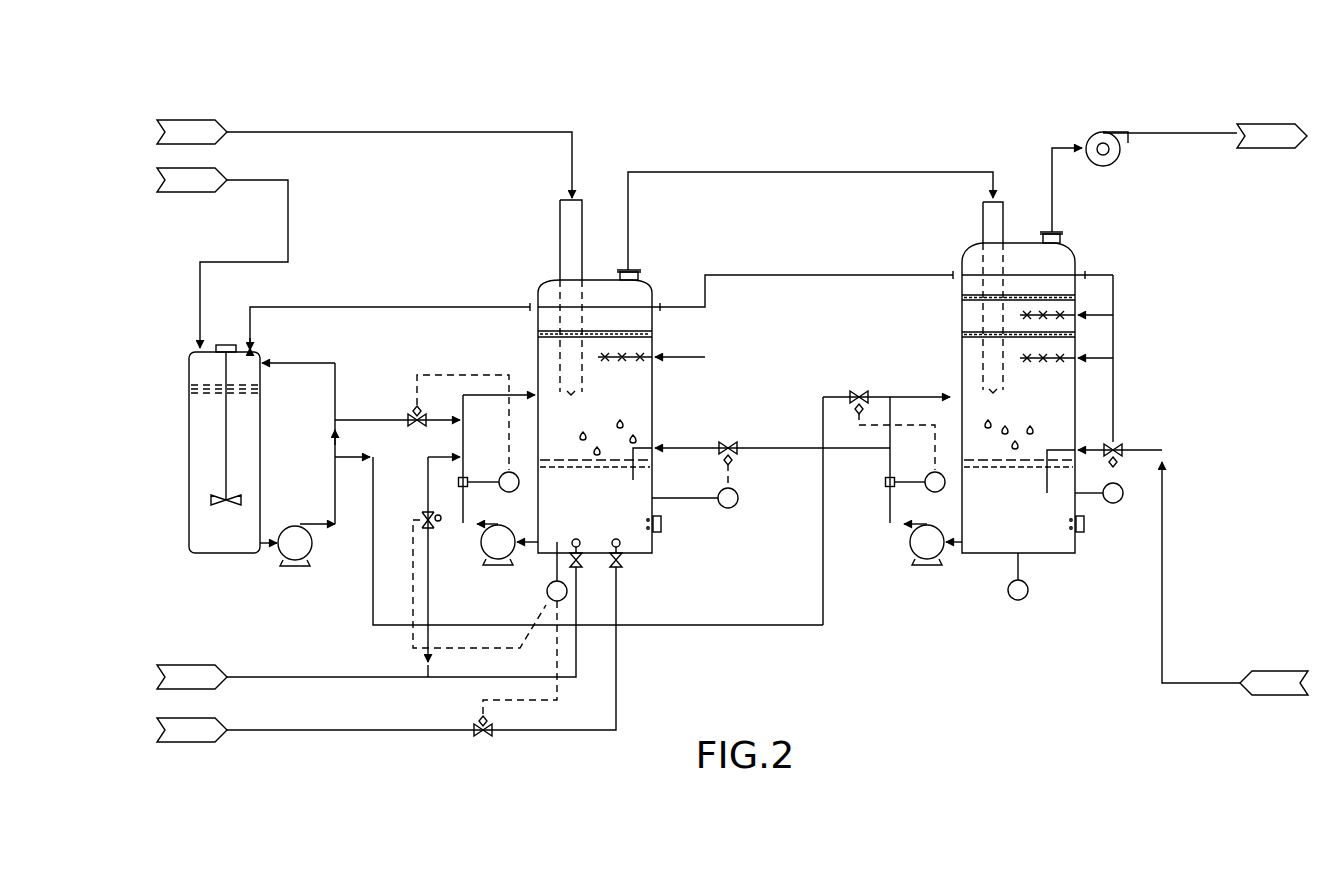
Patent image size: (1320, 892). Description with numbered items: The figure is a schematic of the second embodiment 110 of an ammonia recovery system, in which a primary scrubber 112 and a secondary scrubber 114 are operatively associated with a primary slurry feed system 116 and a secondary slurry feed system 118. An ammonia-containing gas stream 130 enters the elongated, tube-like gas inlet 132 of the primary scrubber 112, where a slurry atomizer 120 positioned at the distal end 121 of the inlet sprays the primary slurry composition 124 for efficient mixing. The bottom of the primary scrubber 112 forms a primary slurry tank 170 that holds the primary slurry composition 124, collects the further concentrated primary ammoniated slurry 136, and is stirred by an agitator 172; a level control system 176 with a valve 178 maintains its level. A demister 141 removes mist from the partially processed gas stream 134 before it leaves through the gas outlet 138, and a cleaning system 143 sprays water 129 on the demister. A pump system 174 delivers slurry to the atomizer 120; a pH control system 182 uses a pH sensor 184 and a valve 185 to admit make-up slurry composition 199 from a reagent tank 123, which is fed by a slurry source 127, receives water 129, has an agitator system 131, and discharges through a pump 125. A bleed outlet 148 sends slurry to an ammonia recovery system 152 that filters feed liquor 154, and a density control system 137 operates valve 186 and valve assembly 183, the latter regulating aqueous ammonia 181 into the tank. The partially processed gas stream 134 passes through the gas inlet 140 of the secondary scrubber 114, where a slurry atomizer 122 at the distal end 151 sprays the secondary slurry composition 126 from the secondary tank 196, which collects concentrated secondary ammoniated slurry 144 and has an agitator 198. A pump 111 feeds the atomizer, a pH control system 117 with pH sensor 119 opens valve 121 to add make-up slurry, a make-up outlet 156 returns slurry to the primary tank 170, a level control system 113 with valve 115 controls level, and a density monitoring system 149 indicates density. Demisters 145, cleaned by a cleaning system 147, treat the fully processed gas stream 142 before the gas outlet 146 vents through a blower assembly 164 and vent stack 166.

The second embodiment 110 is at (362, 105).
The gas stream 130 is at (364, 159).
The slurry source 127 is at (222, 258).
The ammonia recovery system 152 is at (366, 628).
The aqueous ammonia 181 is at (386, 655).
The vent stack 166 is at (1205, 136).
The water 129 is at (1235, 579).
The reagent tank 123 is at (189, 435).
The make-up slurry composition 199 is at (192, 385).
The agitator system 131 is at (227, 345).
The pump 125 is at (292, 565).
The valve 185 is at (413, 410).
The bleed outlet 148 is at (450, 455).
The pH sensor 184 is at (466, 478).
The pH control system 182 is at (518, 490).
The valve 186 is at (426, 514).
The feed liquor 154 is at (318, 677).
The primary slurry feed system 116 is at (477, 542).
The pump system 174 is at (494, 566).
The density control system 137 is at (549, 596).
The valve assembly 183 is at (487, 740).
The primary scrubber 112 is at (540, 286).
The gas inlet 132 is at (560, 220).
The distal end / valve 121 is at (583, 378).
The slurry atomizer 120 is at (574, 397).
The gas outlet 138 is at (640, 278).
The partially processed gas stream 134 is at (822, 173).
The demister 141 is at (630, 334).
The cleaning system 143 is at (640, 358).
The primary slurry composition 124 is at (565, 458).
The concentrated primary ammoniated slurry 136 is at (640, 432).
The valve 178 is at (728, 440).
The level control system 176 is at (735, 507).
The agitator 172 is at (662, 524).
The primary slurry tank 170 is at (636, 556).
The make-up outlet 156 is at (870, 450).
The pH sensor 119 is at (885, 488).
The pH control system 117 is at (946, 489).
The secondary slurry feed system 118 is at (908, 543).
The pump 111 is at (930, 566).
The secondary scrubber 114 is at (950, 254).
The gas inlet 140 is at (983, 220).
The gas outlet 146 is at (1062, 240).
The fully processed gas stream 142 is at (1053, 205).
The blower assembly 164 is at (1118, 162).
The demisters 145 is at (975, 333).
The cleaning system 147 is at (1060, 358).
The distal end 151 is at (1003, 385).
The slurry atomizer 122 is at (1000, 398).
The concentrated secondary ammoniated slurry 144 is at (1020, 440).
The secondary slurry composition 126 is at (1000, 458).
The valve 115 is at (1118, 445).
The level control system 113 is at (1123, 493).
The agitator 198 is at (1085, 525).
The secondary tank 196 is at (1060, 555).
The density monitoring system 149 is at (1028, 596).